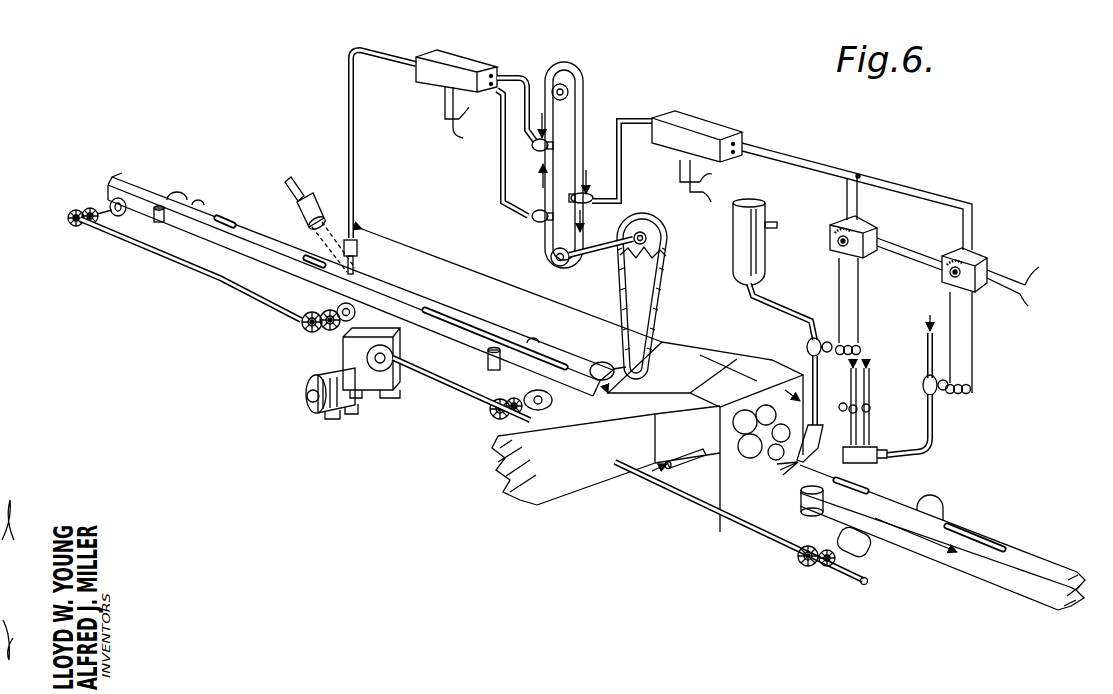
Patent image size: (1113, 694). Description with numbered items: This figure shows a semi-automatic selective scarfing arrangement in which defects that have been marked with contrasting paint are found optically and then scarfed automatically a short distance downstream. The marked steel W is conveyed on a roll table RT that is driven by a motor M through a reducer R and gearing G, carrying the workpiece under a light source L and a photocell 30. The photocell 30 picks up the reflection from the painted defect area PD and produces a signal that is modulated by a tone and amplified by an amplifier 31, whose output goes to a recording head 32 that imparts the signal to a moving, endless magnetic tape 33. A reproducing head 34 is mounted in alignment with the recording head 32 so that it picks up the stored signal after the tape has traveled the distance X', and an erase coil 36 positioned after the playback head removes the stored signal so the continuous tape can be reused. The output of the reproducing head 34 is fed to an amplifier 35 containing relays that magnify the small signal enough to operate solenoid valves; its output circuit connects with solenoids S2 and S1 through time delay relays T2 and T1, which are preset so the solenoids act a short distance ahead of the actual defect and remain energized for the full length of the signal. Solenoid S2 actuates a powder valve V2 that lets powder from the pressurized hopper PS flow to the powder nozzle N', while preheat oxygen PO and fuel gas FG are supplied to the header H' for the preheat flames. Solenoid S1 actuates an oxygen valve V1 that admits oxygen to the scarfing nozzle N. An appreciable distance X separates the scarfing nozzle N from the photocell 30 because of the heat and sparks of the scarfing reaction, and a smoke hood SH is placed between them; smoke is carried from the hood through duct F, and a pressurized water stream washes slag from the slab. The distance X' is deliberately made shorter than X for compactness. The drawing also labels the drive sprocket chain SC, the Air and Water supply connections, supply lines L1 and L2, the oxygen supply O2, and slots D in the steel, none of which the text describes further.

The amplifier 31 is at (446, 57).
The amplifier 35 is at (700, 118).
The recording head 32 is at (525, 127).
The magnetic tape 33 is at (549, 261).
The reproducing head 34 is at (610, 179).
The erase coil 36 is at (533, 219).
The photocell 30 is at (361, 251).
The light source L is at (297, 212).
The painted defect area PD is at (224, 220).
The distance between scarfing nozzle and photocell X is at (512, 285).
The distance between recording head and reproducing head X' is at (564, 161).
The sprocket chain SC is at (662, 294).
The smoke hood SH is at (745, 363).
The pressurized hopper PS is at (737, 237).
The air supply Air is at (786, 232).
The water supply Water is at (693, 452).
The time delay relay T1 is at (978, 252).
The time delay relay T2 is at (866, 229).
The supply line L1 is at (751, 185).
The supply line L2 is at (748, 206).
The solenoid valve S1 is at (972, 398).
The solenoid valve S2 is at (852, 348).
The oxygen supply O2 is at (928, 335).
The oxygen valve V1 is at (921, 382).
The powder valve V2 is at (806, 343).
The preheat oxygen PO is at (856, 370).
The fuel gas FG is at (869, 372).
The powder nozzle N' is at (810, 415).
The header H' is at (872, 438).
The scarfing nozzle N is at (794, 494).
The slot D is at (868, 493).
The marked steel W is at (960, 528).
The duct F is at (478, 472).
The roll table RT is at (340, 308).
The gearing G is at (300, 325).
The reducer R is at (345, 352).
The motor M is at (306, 389).